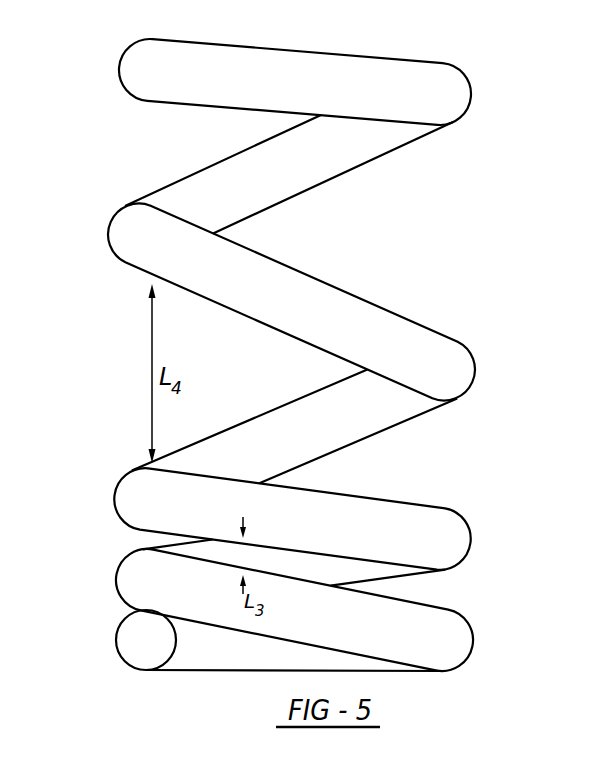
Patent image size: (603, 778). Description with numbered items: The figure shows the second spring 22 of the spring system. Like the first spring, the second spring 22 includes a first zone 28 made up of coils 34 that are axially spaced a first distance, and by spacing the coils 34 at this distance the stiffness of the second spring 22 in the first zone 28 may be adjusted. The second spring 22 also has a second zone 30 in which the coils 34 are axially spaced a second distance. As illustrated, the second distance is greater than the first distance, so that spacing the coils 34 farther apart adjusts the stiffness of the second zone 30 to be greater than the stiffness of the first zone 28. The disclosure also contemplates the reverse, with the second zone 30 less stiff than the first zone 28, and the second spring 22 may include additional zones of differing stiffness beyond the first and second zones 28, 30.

The second spring 22 is at (301, 347).
The first zone 28 is at (251, 591).
The second zone 30 is at (252, 304).
The coils 34 is at (348, 304).